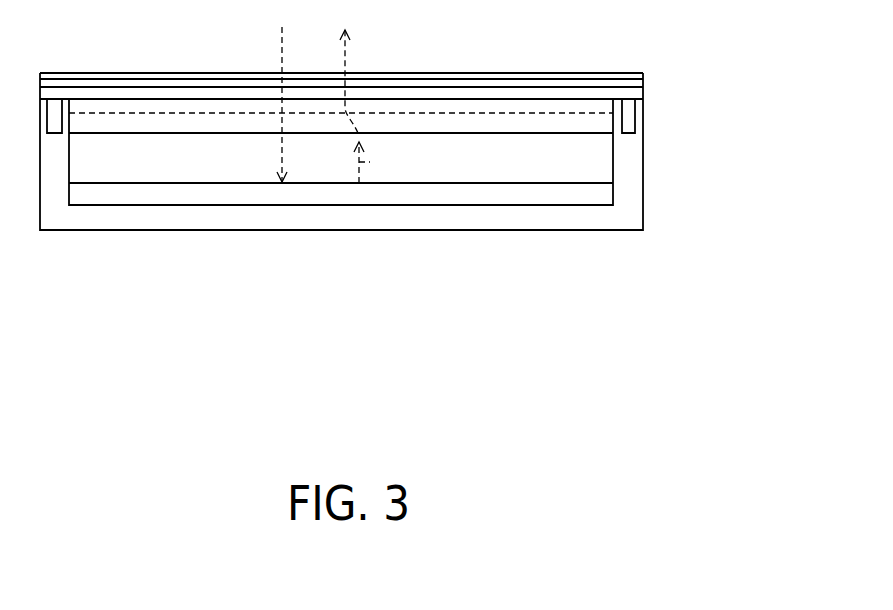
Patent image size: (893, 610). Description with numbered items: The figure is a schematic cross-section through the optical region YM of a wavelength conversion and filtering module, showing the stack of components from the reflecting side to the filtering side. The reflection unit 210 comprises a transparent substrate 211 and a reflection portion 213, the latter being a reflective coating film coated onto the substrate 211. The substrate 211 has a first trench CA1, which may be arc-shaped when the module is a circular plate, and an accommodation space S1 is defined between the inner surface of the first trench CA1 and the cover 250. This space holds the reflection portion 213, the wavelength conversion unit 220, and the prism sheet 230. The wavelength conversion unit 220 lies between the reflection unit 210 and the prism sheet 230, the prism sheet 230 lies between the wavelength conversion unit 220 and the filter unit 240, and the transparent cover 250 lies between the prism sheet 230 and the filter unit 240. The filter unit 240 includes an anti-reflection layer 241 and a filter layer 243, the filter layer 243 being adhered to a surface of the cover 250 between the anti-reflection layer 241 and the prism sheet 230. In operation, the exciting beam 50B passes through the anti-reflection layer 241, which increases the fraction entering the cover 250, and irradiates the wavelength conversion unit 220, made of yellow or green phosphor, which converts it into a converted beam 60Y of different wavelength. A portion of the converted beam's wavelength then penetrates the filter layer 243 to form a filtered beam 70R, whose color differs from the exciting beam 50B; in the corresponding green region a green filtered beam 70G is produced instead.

The substrate 211 is at (196, 215).
The reflection portion 213 is at (127, 193).
The reflection unit 210 is at (212, 280).
The wavelength conversion unit 220 is at (597, 163).
The prism sheet 230 is at (593, 125).
The cover 250 is at (633, 96).
The filter unit 240 is at (399, 60).
The anti-reflection layer 241 is at (638, 76).
The filter layer 243 is at (645, 86).
The accommodation space S1 is at (530, 99).
The first trench CA1 is at (80, 162).
The exciting beam 50B is at (282, 63).
The filtered beam 70R is at (396, 101).
The filtered beam 70G is at (345, 67).
The converted beam 60Y is at (391, 239).
The optical region YM is at (723, 310).